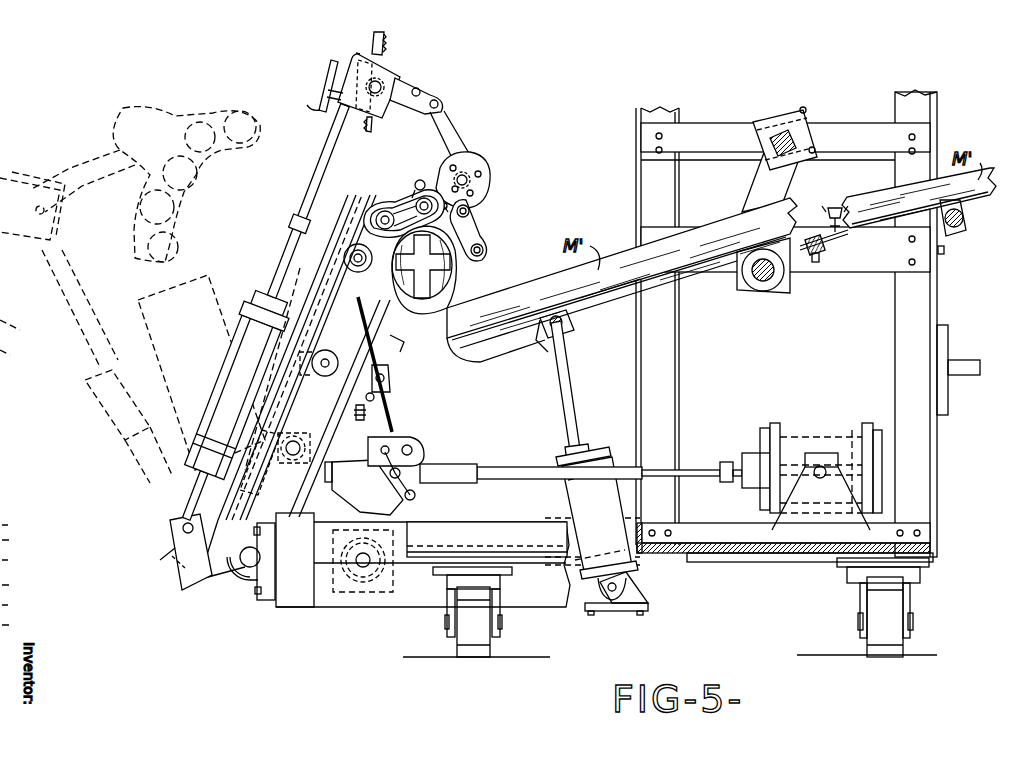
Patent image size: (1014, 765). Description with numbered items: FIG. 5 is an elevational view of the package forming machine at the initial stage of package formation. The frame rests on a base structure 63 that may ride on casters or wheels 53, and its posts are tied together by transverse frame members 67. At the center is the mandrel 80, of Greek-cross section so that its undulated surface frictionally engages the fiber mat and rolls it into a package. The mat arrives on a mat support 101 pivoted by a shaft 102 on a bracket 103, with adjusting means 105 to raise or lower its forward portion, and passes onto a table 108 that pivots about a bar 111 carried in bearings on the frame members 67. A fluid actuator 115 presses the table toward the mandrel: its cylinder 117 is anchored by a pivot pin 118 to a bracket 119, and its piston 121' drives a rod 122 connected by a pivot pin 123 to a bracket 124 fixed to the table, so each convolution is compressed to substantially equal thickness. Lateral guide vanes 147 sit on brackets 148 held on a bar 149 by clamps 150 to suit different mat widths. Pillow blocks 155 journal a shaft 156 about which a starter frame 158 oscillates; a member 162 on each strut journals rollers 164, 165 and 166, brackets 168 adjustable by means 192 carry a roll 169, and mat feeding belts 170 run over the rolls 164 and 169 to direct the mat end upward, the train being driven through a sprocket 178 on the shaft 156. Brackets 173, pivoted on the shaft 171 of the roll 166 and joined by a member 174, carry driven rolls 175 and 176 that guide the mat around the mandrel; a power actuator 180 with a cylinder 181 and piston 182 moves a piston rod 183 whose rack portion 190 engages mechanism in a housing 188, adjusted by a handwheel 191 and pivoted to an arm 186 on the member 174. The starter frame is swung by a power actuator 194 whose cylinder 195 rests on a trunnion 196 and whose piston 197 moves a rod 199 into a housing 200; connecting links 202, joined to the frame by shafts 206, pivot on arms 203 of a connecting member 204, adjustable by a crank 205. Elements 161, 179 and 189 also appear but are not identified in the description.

The casters or wheels 53 is at (490, 645).
The base structure 63 is at (385, 607).
The transversely extending members 67 is at (863, 265).
The mandrel 80 is at (432, 246).
The mat support 101 is at (866, 228).
The shaft 102 is at (952, 228).
The bracket 103 is at (945, 252).
The adjusting means 105 is at (836, 210).
The table 108 is at (578, 327).
The bar 111 is at (768, 286).
The fluid actuator 115 is at (600, 518).
The cylinder 117 is at (562, 500).
The pivot pin 118 is at (617, 587).
The bracket 119 is at (648, 598).
The piston 121' is at (559, 484).
The rod 122 is at (578, 415).
The pivot pin 123 is at (532, 334).
The bracket 124 is at (566, 320).
The vanes 147 is at (615, 248).
The brackets 148 is at (742, 198).
The bar 149 is at (768, 141).
The clamps 150 is at (770, 117).
The pillow blocks 155 is at (250, 592).
The shaft 156 is at (240, 578).
The starter frame 158 is at (205, 577).
The column rail 161 is at (349, 262).
The member 162 is at (296, 273).
The roller 164 is at (350, 258).
The roller 165 is at (368, 216).
The roller 166 is at (418, 181).
The brackets 168 is at (376, 394).
The roll 169 is at (388, 376).
The mat feeding belts 170 is at (398, 344).
The shaft 171 is at (476, 206).
The brackets 173 is at (480, 161).
The member 174 is at (471, 179).
The roll 175 is at (485, 218).
The roll 176 is at (487, 258).
The sprocket 178 is at (180, 548).
The column base 179 is at (254, 502).
The power actuator 180 is at (220, 341).
The cylinder 181 is at (224, 390).
The piston 182 is at (222, 383).
The piston rod 183 is at (298, 225).
The arm 186 is at (443, 113).
The housing 188 is at (396, 74).
The rack 189 is at (369, 121).
The rack portion 190 is at (385, 44).
The handwheel 191 is at (329, 73).
The adjusting means 192 is at (368, 404).
The power actuator 194 is at (860, 422).
The cylinder 195 is at (776, 425).
The trunnion 196 is at (778, 535).
The piston 197 is at (855, 433).
The rod 199 is at (722, 470).
The housing 200 is at (331, 486).
The connecting links 202 is at (378, 446).
The arms 203 is at (405, 498).
The connecting member 204 is at (352, 570).
The crank 205 is at (426, 470).
The shafts 206 is at (300, 458).